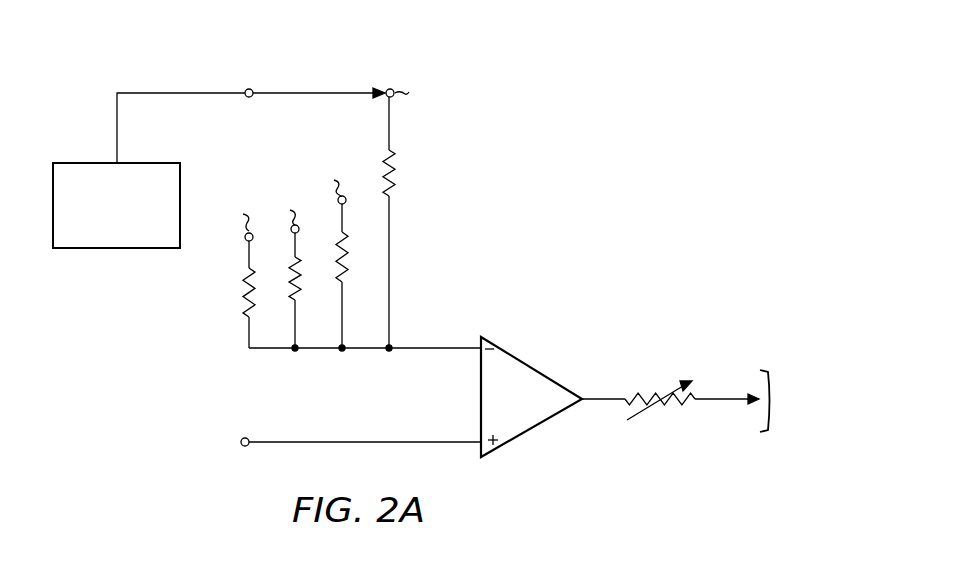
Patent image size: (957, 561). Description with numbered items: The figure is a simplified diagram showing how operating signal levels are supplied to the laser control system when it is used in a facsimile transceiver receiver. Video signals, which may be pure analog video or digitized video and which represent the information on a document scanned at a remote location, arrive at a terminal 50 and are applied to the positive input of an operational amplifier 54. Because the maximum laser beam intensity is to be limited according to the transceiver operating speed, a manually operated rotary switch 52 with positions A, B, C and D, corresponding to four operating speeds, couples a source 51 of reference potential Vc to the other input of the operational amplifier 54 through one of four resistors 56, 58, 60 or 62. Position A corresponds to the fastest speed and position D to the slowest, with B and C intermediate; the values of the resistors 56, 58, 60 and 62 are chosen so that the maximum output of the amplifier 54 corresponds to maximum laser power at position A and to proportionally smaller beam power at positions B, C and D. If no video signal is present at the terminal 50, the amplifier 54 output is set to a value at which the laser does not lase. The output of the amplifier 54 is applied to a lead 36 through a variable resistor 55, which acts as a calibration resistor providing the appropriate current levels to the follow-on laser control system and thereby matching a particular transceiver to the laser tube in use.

The lead 36 is at (810, 401).
The terminal 50 is at (243, 437).
The source of reference potential 51 is at (115, 250).
The manually operated rotary switch 52 is at (345, 63).
The operational amplifier 54 is at (527, 364).
The variable resistor 55 is at (657, 408).
The resistor 56 is at (393, 171).
The resistor 58 is at (345, 268).
The resistor 60 is at (299, 293).
The resistor 62 is at (246, 286).